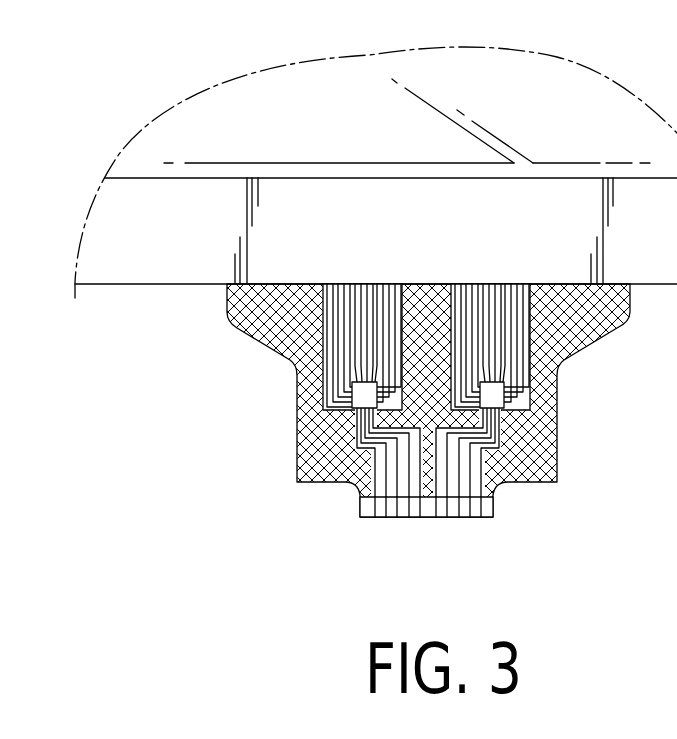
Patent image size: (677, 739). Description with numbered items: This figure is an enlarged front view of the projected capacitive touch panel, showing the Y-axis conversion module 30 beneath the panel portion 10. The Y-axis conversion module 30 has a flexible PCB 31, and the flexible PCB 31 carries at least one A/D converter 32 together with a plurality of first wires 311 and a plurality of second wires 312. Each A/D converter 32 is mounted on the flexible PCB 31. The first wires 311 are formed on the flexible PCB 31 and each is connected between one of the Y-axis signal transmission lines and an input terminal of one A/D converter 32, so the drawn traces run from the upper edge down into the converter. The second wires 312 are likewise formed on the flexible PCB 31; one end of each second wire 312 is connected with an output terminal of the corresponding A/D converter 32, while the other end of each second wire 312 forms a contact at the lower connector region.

The housing of electronic device 10 is at (172, 270).
The Y-axis conversion module 30 is at (297, 415).
The flexible PCB 31 is at (500, 400).
The first wires 311 is at (523, 363).
The second wires 312 is at (473, 474).
The A/D converter 32 is at (357, 405).